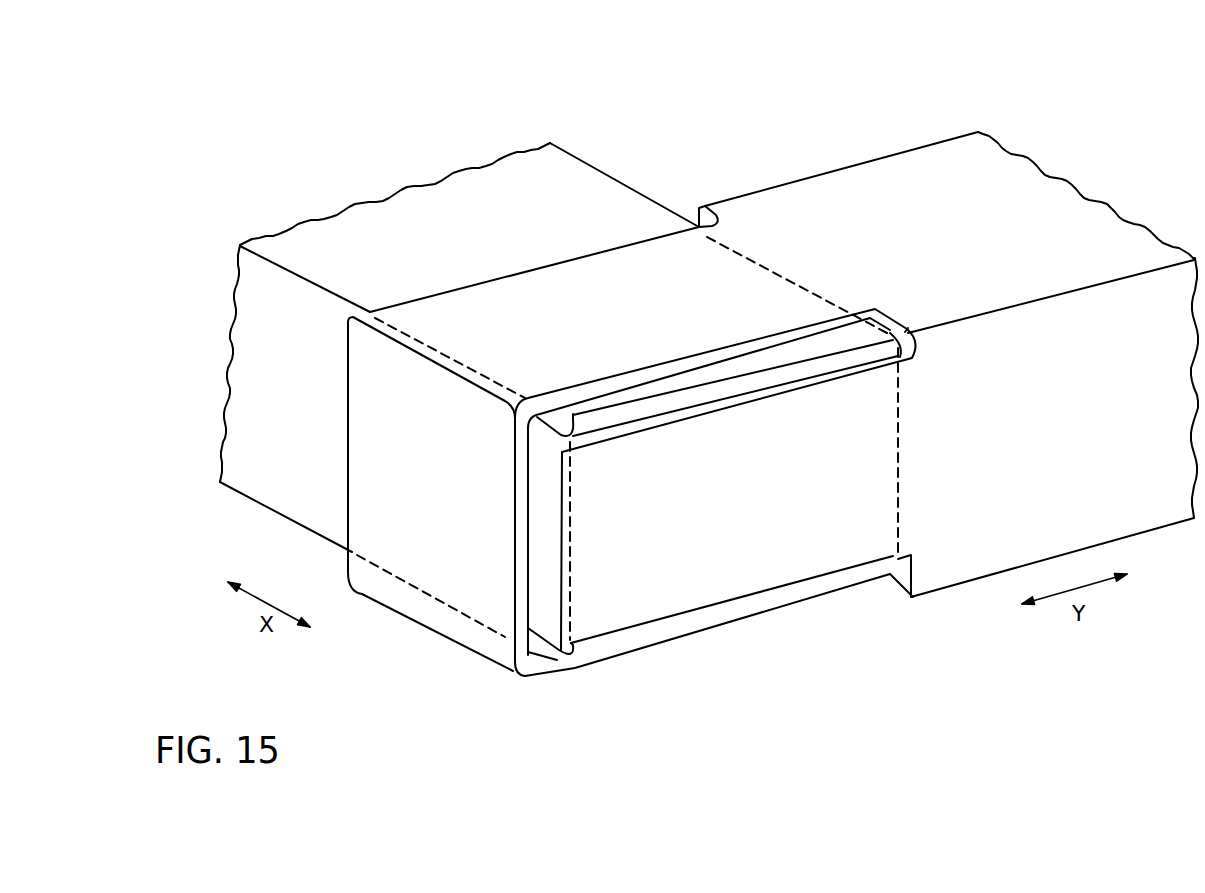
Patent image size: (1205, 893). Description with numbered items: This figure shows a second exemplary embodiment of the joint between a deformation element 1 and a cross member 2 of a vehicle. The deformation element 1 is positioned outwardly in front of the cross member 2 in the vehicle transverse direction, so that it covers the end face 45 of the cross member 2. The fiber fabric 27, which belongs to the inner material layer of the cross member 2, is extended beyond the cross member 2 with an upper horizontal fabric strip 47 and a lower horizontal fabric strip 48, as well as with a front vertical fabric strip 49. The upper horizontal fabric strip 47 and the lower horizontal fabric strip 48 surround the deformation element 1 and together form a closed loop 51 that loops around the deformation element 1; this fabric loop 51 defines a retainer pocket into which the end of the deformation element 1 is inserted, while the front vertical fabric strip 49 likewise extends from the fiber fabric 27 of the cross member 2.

The deformation element 1 is at (600, 108).
The cross member 2 is at (951, 312).
The fiber fabric 27 is at (1058, 247).
The end face 45 is at (705, 212).
The upper horizontal fabric strip 47 is at (628, 245).
The lower horizontal fabric strip 48 is at (532, 670).
The front vertical fabric strip 49 is at (790, 586).
The closed loop 51 is at (653, 682).